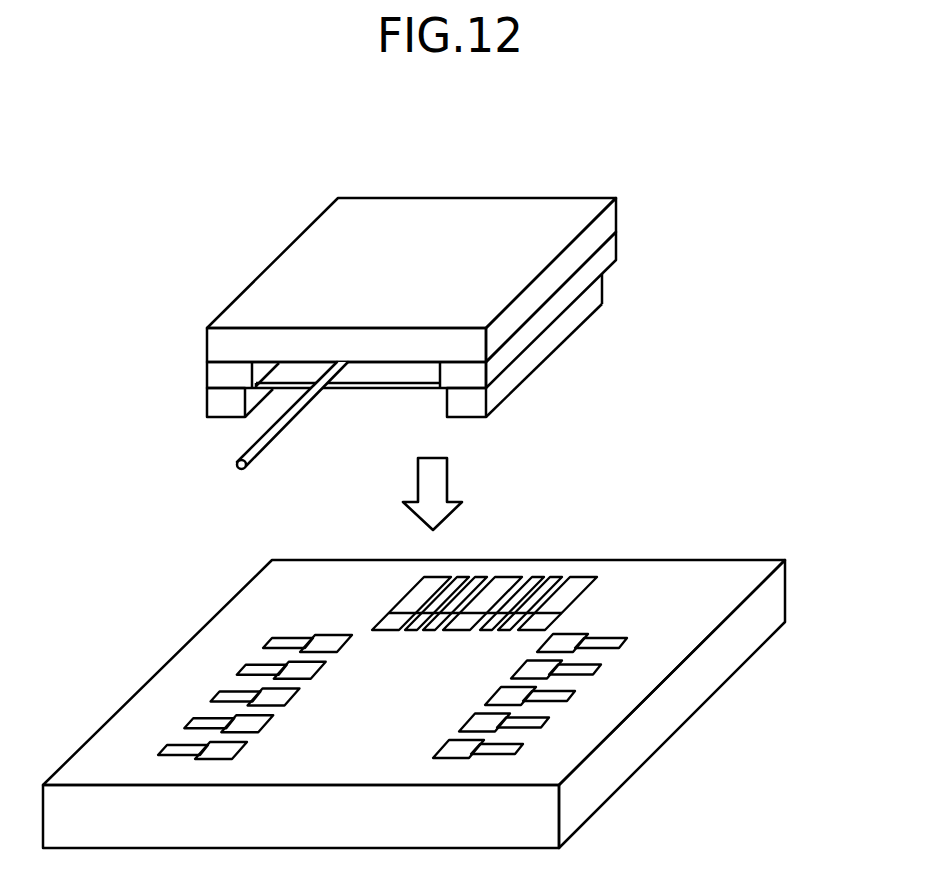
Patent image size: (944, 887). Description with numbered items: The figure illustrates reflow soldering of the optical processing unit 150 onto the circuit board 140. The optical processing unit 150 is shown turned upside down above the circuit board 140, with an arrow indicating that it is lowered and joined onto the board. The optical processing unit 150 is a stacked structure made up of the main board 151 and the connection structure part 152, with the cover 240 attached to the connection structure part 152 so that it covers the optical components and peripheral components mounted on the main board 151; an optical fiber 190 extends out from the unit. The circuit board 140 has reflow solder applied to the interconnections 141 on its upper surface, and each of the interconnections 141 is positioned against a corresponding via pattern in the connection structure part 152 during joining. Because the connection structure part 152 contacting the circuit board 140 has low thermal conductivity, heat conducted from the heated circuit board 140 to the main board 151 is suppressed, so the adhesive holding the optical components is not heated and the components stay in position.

The optical processing unit 150 is at (352, 168).
The main board 151 is at (617, 205).
The connection structure part 152 is at (617, 245).
The cover 240 is at (371, 380).
The optical fiber 190 is at (268, 437).
The circuit board 140 is at (786, 590).
The interconnections 141 is at (533, 720).